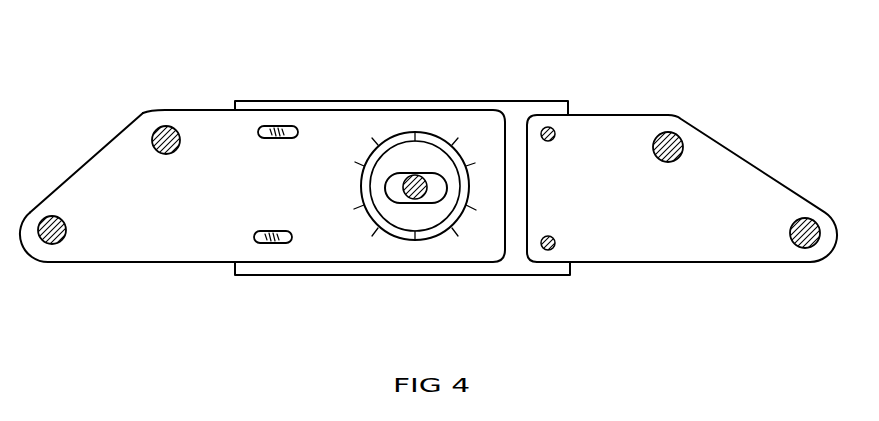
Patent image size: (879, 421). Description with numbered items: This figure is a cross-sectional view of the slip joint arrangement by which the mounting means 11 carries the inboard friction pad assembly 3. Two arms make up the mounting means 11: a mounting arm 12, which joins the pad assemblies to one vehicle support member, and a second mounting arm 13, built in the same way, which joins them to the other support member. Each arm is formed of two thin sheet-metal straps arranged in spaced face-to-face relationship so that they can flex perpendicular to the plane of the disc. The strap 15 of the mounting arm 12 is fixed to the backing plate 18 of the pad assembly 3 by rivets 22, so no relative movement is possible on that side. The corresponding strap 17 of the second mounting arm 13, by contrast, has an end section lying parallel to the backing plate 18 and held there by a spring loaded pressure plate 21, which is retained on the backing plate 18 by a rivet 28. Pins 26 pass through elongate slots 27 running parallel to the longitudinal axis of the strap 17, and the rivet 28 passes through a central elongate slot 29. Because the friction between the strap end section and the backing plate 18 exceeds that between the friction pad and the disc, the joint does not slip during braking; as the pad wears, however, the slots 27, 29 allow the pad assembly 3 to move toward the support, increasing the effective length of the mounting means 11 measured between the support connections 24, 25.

The inboard friction pad assembly 3 is at (399, 100).
The mounting means 11 is at (186, 96).
The mounting arm 12 is at (669, 265).
The second mounting arm 13 is at (200, 264).
The strap 15 is at (668, 147).
The strap 17 is at (120, 190).
The backing plate 18 is at (512, 264).
The spring loaded pressure plate 21 is at (442, 147).
The rivets 22 is at (556, 134).
The support connection 24 is at (795, 248).
The support connection 25 is at (624, 140).
The pins 26 is at (278, 126).
The elongate slots 27 is at (291, 128).
The rivet 28 is at (410, 198).
The central elongate slot 29 is at (432, 196).